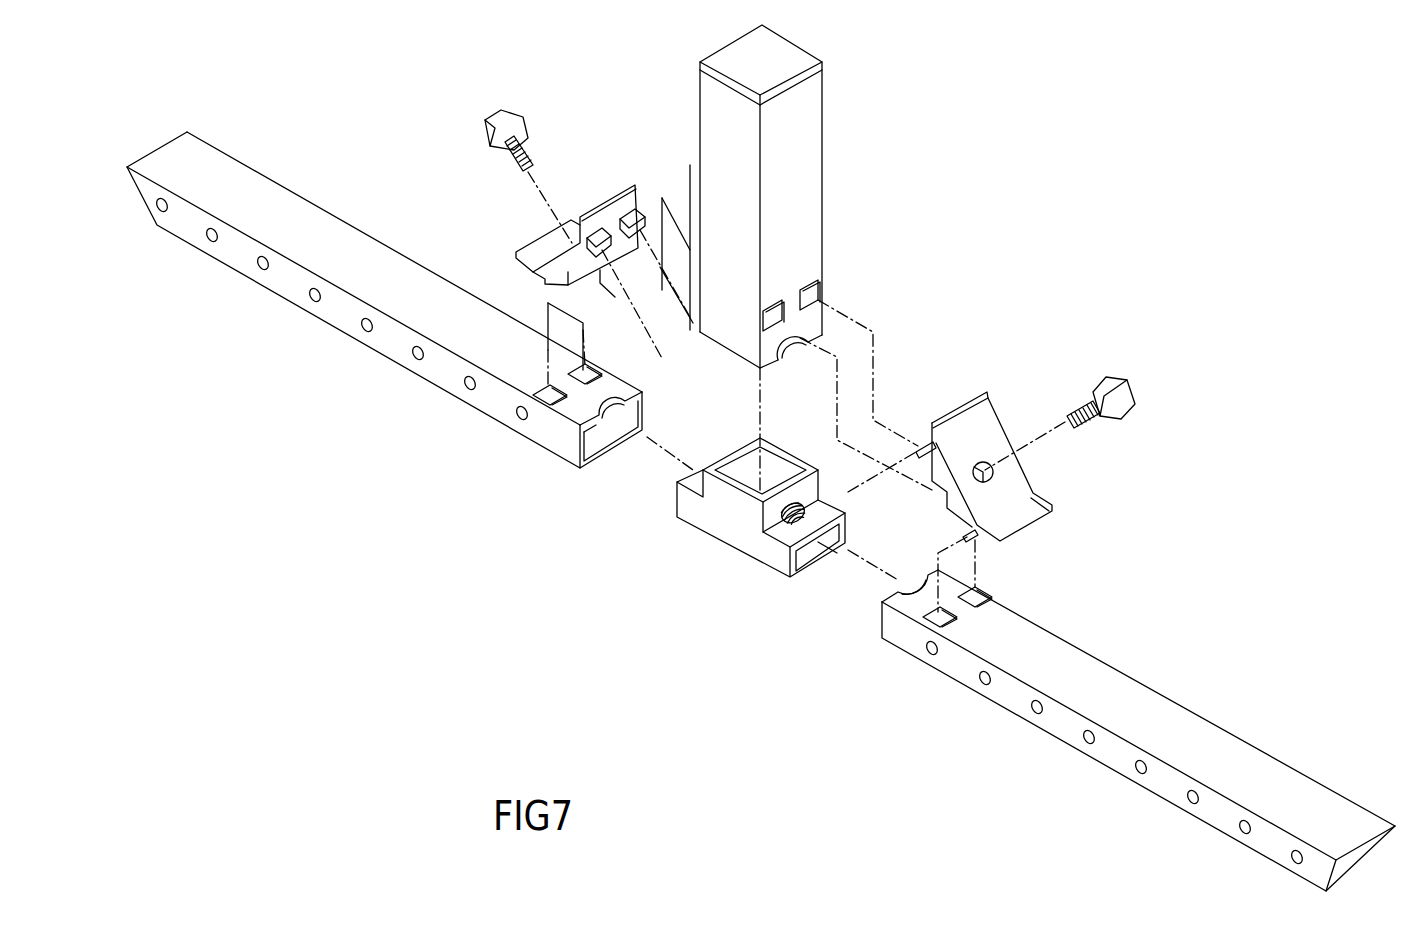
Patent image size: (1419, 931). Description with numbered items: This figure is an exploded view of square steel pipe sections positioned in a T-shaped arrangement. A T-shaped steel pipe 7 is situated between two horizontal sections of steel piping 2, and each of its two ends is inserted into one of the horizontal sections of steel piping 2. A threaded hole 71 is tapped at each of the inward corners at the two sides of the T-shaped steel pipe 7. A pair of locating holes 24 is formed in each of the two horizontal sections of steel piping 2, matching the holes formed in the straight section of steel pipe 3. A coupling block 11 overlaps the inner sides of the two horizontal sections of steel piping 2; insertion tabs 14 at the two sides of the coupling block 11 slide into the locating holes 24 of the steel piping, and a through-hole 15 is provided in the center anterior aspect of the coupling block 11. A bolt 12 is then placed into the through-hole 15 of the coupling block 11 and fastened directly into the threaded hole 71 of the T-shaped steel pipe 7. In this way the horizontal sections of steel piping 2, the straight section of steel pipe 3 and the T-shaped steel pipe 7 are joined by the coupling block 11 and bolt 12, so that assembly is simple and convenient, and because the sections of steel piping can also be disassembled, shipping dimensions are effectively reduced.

The horizontal section of steel piping 2 is at (761, 511).
The straight section of steel pipe 3 is at (789, 196).
The T-shaped steel pipe 7 is at (754, 525).
The threaded hole 71 is at (812, 569).
The coupling block 11 is at (787, 331).
The bolt 12 is at (1136, 375).
The insertion tab 14 is at (761, 297).
The through-hole 15 is at (960, 397).
The locating hole 24 is at (772, 526).